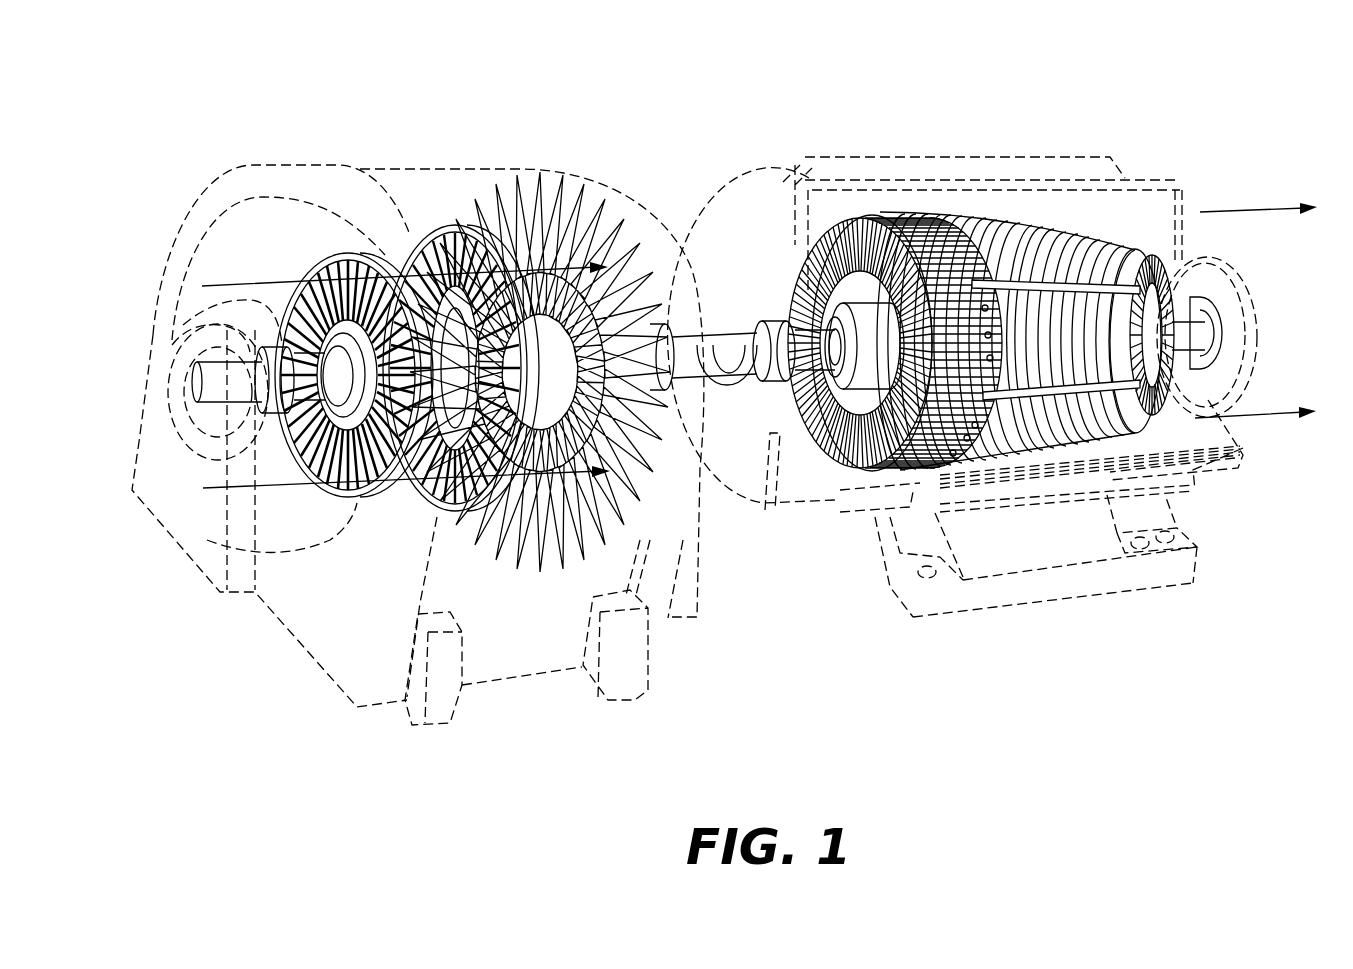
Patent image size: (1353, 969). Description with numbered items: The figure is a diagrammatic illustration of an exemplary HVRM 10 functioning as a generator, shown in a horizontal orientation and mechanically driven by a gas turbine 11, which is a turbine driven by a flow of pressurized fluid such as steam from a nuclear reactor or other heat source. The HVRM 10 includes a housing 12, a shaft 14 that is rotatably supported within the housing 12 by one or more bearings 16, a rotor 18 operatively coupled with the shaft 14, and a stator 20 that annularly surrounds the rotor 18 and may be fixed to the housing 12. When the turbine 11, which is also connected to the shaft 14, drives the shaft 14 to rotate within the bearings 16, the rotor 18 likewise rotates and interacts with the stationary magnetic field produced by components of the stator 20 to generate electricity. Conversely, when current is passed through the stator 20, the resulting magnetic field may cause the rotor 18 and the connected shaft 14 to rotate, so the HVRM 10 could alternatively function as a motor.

The HVRM 10 is at (912, 100).
The gas turbine 11 is at (327, 118).
The housing 12 is at (955, 603).
The shaft 14 is at (817, 352).
The bearings 16 is at (1205, 305).
The rotor 18 is at (880, 313).
The stator 20 is at (993, 228).